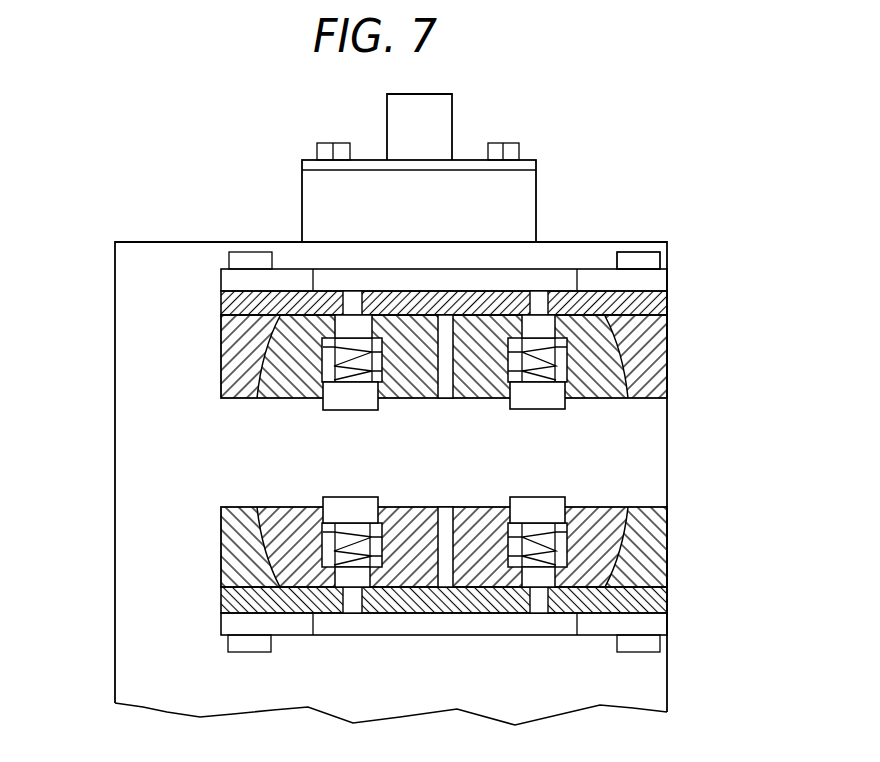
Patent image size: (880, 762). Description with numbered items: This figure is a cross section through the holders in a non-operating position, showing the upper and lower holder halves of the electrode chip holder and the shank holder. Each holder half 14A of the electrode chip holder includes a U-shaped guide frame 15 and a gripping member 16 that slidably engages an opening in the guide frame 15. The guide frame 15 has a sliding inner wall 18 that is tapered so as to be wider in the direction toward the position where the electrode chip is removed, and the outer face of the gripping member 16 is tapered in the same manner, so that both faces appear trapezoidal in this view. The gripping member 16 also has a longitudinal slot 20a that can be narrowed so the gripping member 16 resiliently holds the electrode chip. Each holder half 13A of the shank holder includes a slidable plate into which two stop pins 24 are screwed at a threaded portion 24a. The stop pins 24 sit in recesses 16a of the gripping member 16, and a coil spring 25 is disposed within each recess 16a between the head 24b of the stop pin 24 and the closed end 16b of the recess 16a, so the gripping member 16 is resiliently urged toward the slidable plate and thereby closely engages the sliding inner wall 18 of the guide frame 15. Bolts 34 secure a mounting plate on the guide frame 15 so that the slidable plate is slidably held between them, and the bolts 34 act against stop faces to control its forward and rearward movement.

The holder half 13A is at (395, 290).
The holder half 14A is at (218, 342).
The U-shaped guide frame 15 is at (657, 342).
The gripping member 16 is at (602, 368).
The recess 16a is at (328, 366).
The closed end 16b is at (318, 313).
The sliding inner wall 18 is at (622, 385).
The longitudinal slot 20a is at (447, 333).
The stop pin 24 is at (525, 380).
The threaded portion 24a is at (537, 293).
The head 24b is at (527, 400).
The coil spring 25 is at (363, 380).
The bolt 34 is at (637, 253).